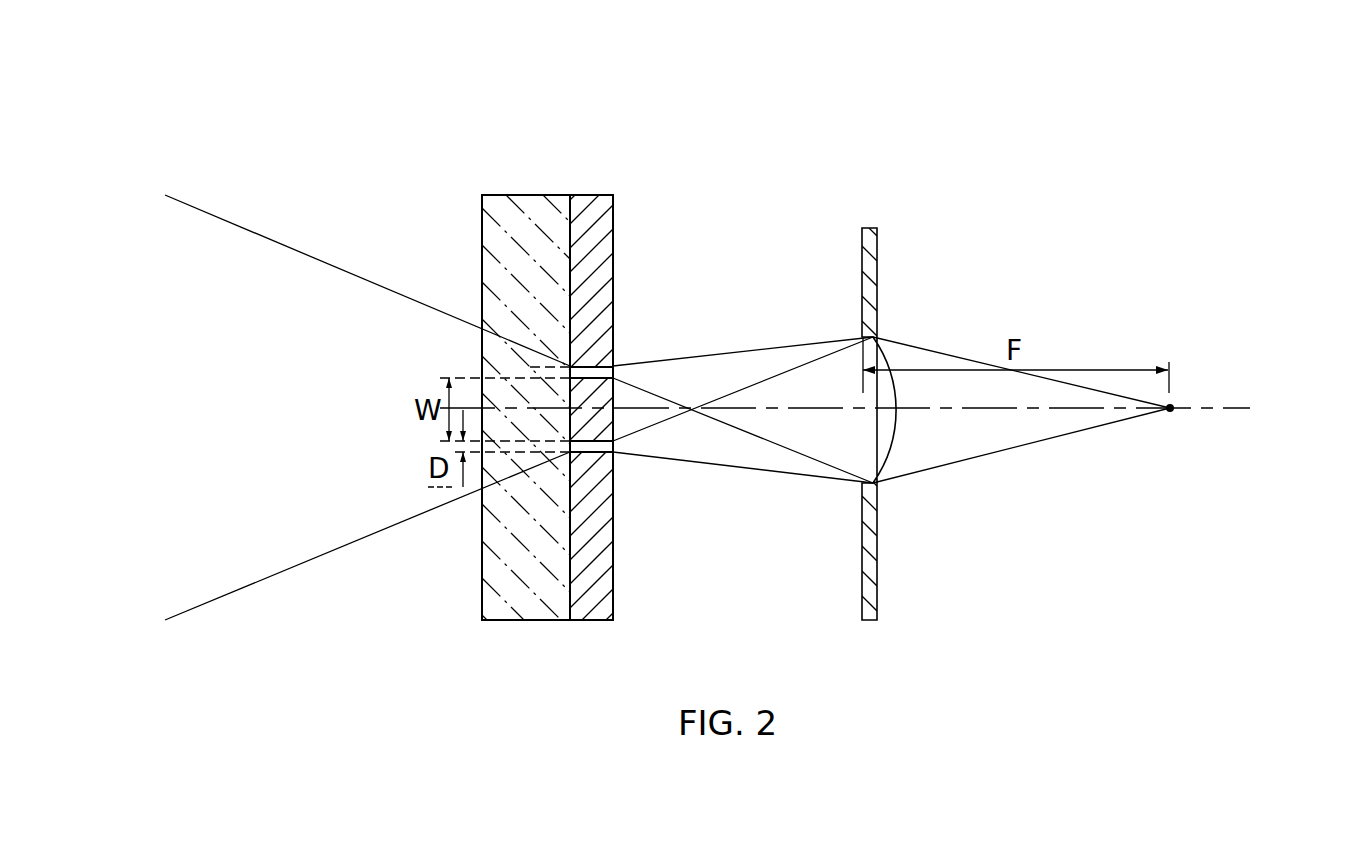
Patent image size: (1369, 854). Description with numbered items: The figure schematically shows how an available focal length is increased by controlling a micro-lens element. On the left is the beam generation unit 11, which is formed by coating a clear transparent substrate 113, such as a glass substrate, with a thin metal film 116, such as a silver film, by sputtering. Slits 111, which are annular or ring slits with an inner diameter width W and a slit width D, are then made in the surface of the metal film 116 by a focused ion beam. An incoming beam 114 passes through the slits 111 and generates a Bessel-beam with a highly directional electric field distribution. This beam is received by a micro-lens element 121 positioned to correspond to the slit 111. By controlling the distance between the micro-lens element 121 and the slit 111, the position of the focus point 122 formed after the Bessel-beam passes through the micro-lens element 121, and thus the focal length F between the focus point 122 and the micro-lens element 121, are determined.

The beam generation unit 11 is at (577, 97).
The slits 111 is at (593, 365).
The transparent substrate 113 is at (523, 196).
The beam 114 is at (285, 237).
The metal film 116 is at (597, 196).
The micro-lens element 121 is at (877, 340).
The focus point 122 is at (1170, 408).